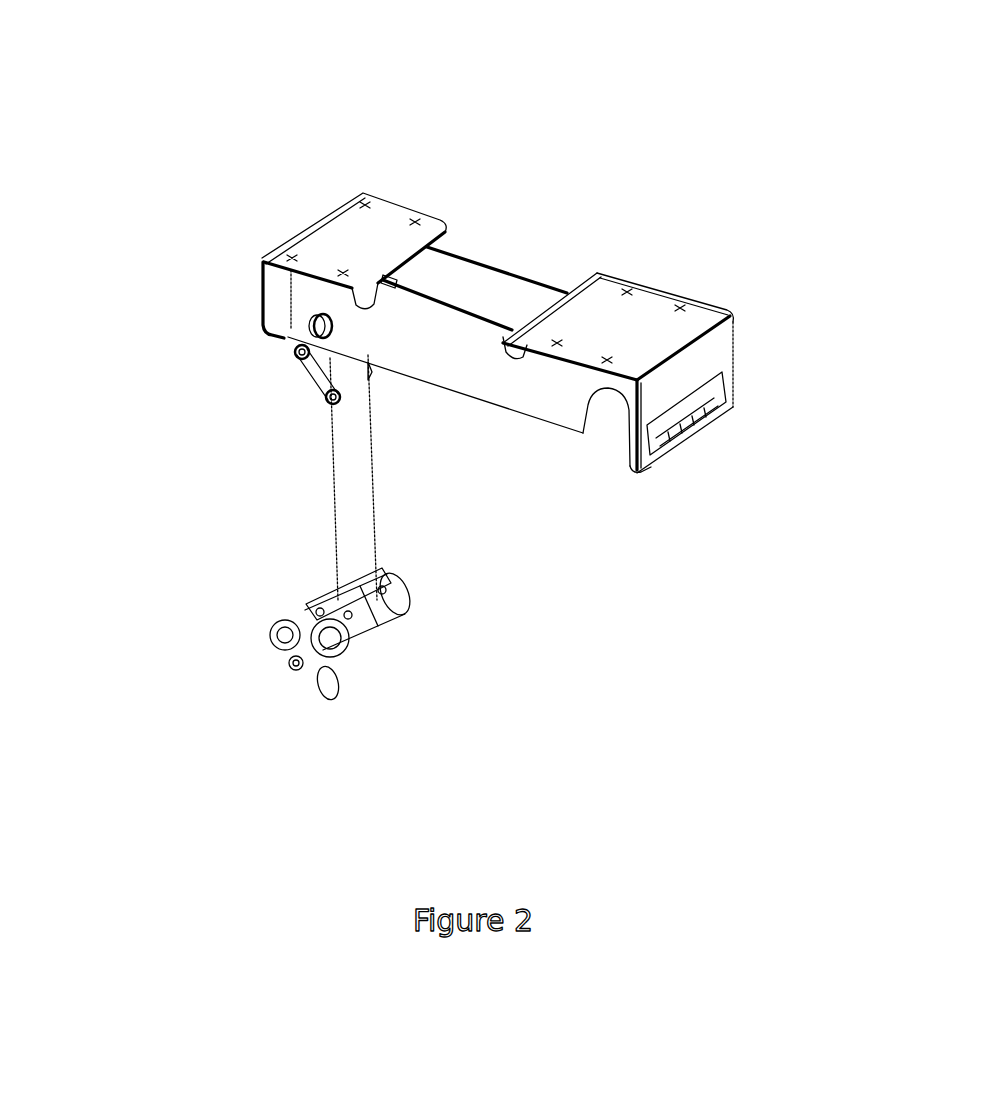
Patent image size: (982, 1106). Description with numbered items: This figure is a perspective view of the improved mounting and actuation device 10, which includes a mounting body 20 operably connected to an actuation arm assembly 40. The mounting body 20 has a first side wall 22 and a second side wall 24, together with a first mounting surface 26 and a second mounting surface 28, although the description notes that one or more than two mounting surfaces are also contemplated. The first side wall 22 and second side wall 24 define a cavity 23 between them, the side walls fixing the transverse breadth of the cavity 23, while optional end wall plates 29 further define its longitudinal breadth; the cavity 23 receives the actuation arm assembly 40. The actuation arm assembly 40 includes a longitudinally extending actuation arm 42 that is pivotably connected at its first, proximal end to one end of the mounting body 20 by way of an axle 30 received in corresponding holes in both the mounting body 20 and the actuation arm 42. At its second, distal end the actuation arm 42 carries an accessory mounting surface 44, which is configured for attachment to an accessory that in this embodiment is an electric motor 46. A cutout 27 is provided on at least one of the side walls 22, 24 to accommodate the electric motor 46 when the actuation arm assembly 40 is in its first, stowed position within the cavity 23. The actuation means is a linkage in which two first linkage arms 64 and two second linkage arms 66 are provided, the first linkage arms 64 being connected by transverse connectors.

The mounting and actuation device 10 is at (200, 114).
The mounting body 20 is at (550, 206).
The first side wall 22 is at (483, 372).
The cavity 23 is at (492, 300).
The second side wall 24 is at (500, 272).
The first mounting surface 26 is at (650, 302).
The cutout 27 is at (612, 428).
The second mounting surface 28 is at (384, 200).
The end wall plates 29 is at (260, 267).
The axle 30 is at (310, 326).
The actuation arm assembly 40 is at (112, 403).
The actuation arm 42 is at (347, 478).
The accessory mounting surface 44 is at (387, 590).
The electric motor 46 is at (367, 625).
The first linkage arms 64 is at (296, 353).
The second linkage arms 66 is at (320, 365).